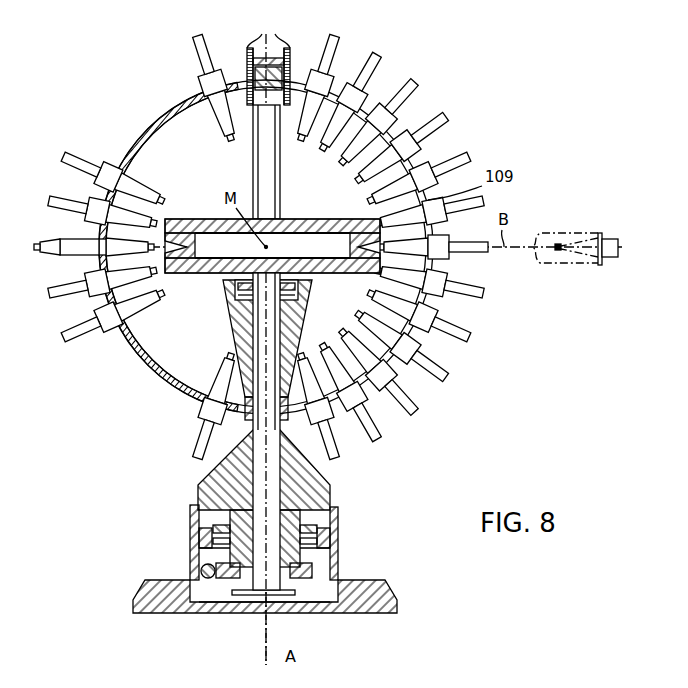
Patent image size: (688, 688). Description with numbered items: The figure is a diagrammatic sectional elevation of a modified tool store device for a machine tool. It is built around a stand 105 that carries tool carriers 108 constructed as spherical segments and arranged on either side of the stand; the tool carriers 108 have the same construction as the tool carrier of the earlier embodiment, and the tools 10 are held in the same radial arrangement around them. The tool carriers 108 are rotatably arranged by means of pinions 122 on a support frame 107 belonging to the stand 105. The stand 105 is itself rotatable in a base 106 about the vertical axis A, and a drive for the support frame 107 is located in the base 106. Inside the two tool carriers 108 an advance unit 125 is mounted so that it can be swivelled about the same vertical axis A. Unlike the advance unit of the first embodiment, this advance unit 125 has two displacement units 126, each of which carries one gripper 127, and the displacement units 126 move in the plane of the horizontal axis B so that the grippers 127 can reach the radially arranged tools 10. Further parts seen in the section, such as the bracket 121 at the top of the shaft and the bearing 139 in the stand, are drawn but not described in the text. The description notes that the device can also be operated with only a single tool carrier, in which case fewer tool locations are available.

The tool 10 is at (66, 293).
The stand 105 is at (180, 480).
The base 106 is at (385, 589).
The support frame 107 is at (310, 475).
The tool carrier 108 is at (150, 121).
The bracket 121 is at (291, 78).
The pinion 122 is at (266, 33).
The advance unit 125 is at (337, 214).
The displacement unit 126 is at (303, 238).
The gripper 127 is at (174, 238).
The bearing 139 is at (212, 562).